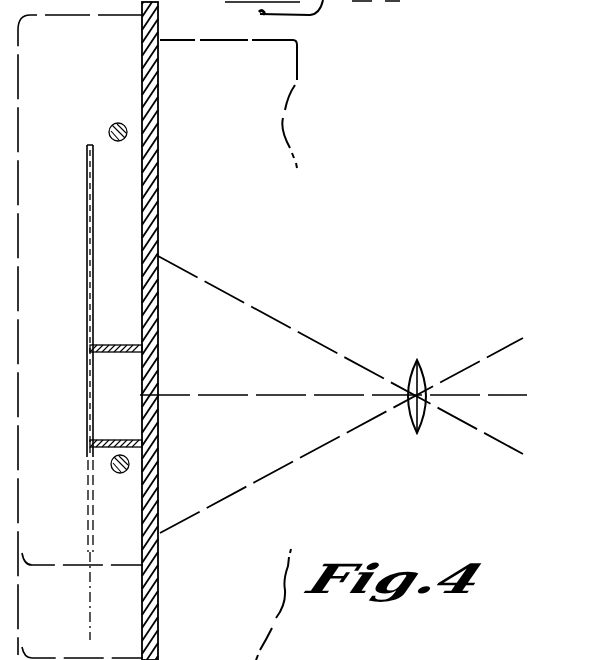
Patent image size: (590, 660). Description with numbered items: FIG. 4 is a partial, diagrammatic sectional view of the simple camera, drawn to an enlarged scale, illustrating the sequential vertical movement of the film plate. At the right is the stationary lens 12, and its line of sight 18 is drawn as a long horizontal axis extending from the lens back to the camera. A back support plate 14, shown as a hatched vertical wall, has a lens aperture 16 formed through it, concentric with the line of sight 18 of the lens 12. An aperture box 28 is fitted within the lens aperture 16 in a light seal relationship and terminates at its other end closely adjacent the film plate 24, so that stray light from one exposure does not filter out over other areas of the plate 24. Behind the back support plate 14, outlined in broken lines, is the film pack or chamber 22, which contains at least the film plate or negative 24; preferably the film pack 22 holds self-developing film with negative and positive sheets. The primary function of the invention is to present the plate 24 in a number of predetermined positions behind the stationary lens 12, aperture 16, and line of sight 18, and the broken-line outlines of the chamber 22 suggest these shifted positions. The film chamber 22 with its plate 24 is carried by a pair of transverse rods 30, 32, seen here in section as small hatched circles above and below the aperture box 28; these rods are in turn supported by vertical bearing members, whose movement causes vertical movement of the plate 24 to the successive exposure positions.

The lens 12 is at (428, 373).
The back support plate 14 is at (152, 86).
The lens aperture 16 is at (162, 355).
The line of sight 18 is at (324, 394).
The film pack 22 is at (114, 55).
The film plate 24 is at (88, 222).
The aperture box 28 is at (110, 343).
The transverse rod 30 is at (110, 125).
The transverse rod 32 is at (128, 474).